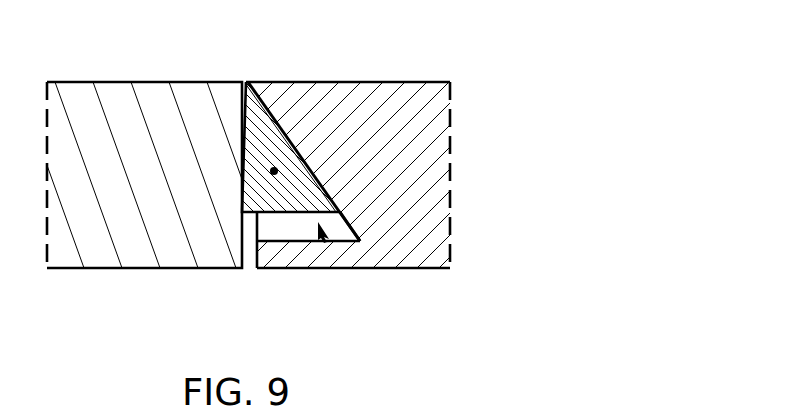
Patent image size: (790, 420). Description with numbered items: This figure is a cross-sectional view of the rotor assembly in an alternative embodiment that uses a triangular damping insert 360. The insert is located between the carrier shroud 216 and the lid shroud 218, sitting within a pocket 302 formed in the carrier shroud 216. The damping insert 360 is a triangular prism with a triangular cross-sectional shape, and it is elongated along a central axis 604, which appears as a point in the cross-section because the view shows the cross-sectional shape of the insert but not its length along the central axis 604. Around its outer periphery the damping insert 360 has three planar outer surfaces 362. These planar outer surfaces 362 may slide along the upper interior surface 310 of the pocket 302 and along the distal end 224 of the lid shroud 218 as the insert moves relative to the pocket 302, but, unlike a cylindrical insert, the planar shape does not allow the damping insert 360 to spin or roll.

The lid shroud 218 is at (114, 97).
The carrier shroud 216 is at (418, 97).
The planar outer surfaces 362 is at (241, 157).
The central axis 604 is at (274, 167).
The distal end 224 is at (247, 232).
The triangular damping insert 360 is at (303, 242).
The pocket 302 is at (325, 242).
The upper interior surface 310 is at (345, 232).